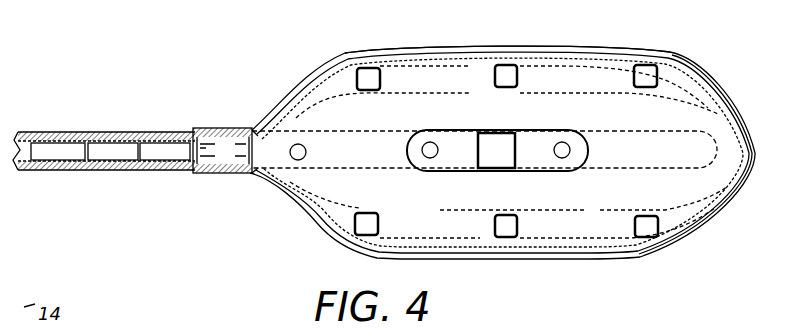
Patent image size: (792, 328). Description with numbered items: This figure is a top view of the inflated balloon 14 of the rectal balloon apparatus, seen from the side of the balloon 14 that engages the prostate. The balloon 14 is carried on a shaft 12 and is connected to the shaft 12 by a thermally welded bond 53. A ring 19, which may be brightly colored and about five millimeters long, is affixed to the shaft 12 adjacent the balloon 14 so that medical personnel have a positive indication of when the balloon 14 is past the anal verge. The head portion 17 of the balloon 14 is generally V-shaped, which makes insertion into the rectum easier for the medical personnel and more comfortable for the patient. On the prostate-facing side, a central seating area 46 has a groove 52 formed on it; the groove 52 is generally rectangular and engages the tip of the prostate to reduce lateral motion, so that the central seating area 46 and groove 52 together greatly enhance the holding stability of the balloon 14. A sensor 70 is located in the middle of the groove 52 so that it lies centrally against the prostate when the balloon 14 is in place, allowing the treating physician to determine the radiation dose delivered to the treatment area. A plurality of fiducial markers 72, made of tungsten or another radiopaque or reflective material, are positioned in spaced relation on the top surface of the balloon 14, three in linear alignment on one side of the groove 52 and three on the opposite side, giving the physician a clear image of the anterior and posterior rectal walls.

The shaft 12 is at (120, 131).
The balloon 14 is at (556, 47).
The head portion 17 is at (733, 106).
The ring 19 is at (218, 129).
The central seating area 46 is at (378, 50).
The groove 52 is at (452, 178).
The thermally welded bond 53 is at (249, 174).
The sensor 70 is at (492, 143).
The fiducial markers 72 is at (357, 78).